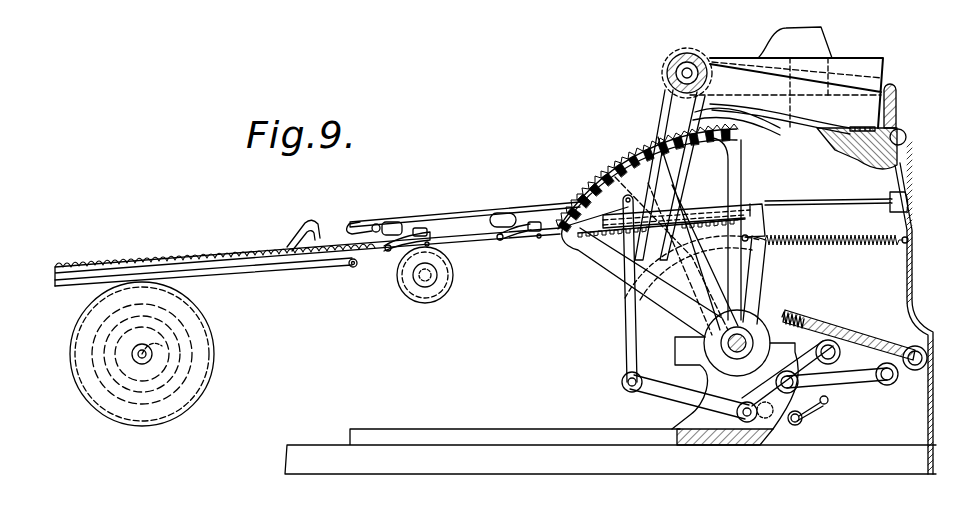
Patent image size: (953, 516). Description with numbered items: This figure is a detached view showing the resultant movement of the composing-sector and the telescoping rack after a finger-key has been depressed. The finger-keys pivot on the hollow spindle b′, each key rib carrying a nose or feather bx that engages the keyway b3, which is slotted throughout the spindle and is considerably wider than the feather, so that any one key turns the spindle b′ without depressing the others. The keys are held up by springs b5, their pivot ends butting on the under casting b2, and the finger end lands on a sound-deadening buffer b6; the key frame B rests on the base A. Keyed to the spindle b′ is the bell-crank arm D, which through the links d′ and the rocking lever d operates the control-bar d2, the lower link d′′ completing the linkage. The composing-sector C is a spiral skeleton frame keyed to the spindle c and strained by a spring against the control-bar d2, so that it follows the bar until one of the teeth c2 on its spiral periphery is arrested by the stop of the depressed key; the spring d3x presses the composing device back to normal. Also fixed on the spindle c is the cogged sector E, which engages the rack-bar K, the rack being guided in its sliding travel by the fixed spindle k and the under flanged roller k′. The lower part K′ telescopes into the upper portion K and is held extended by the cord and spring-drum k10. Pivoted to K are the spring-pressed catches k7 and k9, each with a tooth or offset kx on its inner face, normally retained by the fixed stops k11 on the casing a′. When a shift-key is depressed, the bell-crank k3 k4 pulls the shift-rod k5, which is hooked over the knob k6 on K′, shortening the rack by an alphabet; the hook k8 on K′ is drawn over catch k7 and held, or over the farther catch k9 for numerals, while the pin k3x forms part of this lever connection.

The base A is at (583, 437).
The casing a′ is at (912, 266).
The frame housing B is at (793, 98).
The hollow spindle b′ is at (678, 56).
The nose or feather bx is at (664, 98).
The under casting b2 is at (907, 138).
The keyway b3 is at (695, 94).
The spring b5 is at (805, 125).
The buffer b6 is at (890, 112).
The composing-sector C is at (728, 184).
The spindle c is at (730, 358).
The teeth c2 is at (632, 160).
The bell-crank arm D is at (626, 327).
The rocking lever d is at (796, 368).
The links d′ is at (882, 380).
The lower link d′′ is at (665, 390).
The control-bar d2 is at (852, 332).
The spring d3x is at (792, 316).
The cogged sector E is at (760, 268).
The rack-bar K is at (760, 204).
The fixed spindle k is at (828, 203).
The lower telescoping portion of rack-bar K′ is at (84, 276).
The under flanged roller k′ is at (450, 286).
The bell-crank k3 is at (792, 414).
The pin k3x is at (814, 398).
The bell-crank arm k4 is at (684, 268).
The shift-rod k5 is at (432, 214).
The knob k6 is at (352, 223).
The catch k7 is at (395, 258).
The hook k8 is at (296, 230).
The catch k9 is at (528, 242).
The cord and spring-drum k10 is at (204, 319).
The fixed stops k11 is at (392, 222).
The tooth or offset kx is at (428, 232).